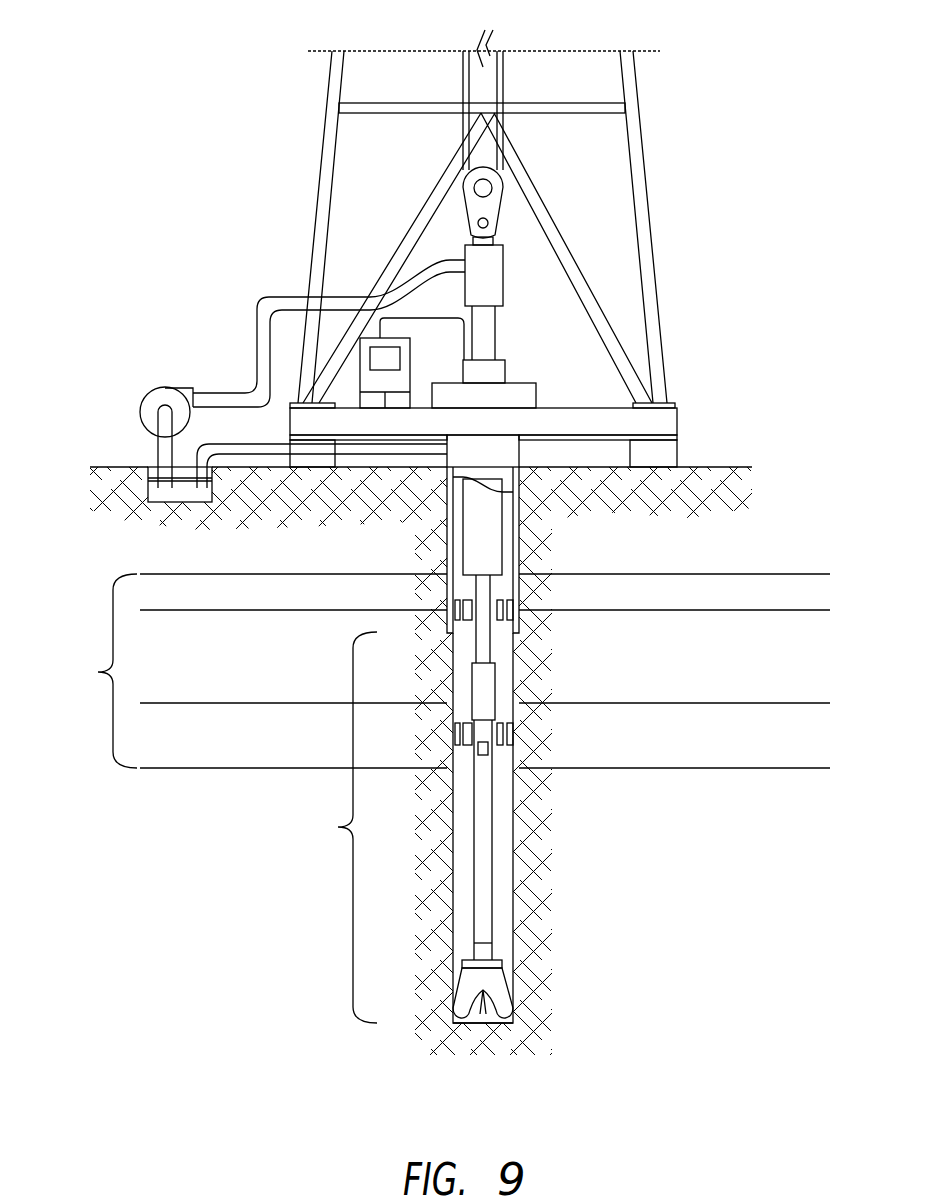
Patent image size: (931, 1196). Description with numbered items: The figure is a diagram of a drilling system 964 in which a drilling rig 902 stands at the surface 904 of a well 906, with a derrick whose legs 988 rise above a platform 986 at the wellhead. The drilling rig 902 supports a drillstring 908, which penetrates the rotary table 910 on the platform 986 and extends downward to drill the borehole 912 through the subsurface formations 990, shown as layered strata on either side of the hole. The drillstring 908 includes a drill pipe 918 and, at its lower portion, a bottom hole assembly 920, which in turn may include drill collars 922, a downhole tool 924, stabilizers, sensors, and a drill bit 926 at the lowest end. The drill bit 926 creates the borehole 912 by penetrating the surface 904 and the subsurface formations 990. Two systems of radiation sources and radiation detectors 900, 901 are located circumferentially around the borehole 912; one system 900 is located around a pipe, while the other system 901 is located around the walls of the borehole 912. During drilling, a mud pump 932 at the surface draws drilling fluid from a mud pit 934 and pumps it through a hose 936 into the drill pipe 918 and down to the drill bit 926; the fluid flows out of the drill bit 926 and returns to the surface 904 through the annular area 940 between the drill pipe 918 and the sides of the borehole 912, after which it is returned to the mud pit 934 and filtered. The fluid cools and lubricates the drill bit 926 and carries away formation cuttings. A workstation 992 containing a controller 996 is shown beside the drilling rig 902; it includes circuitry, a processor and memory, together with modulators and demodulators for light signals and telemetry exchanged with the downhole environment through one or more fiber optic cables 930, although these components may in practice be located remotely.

The system of radiation sources and radiation detectors 900 is at (549, 627).
The system of radiation sources and radiation detectors 901 is at (520, 733).
The drilling rig 902 is at (653, 258).
The surface 904 is at (740, 467).
The well 906 is at (546, 467).
The drillstring 908 is at (493, 833).
The rotary table 910 is at (520, 383).
The borehole 912 is at (513, 910).
The drill pipe 918 is at (505, 587).
The bottom hole assembly 920 is at (337, 827).
The drill collars 922 is at (505, 520).
The downhole tool 924 is at (495, 940).
The drill bit 926 is at (503, 990).
The fiber optic cables 930 is at (467, 383).
The mud pump 932 is at (163, 388).
The mud pit 934 is at (176, 503).
The hose 936 is at (263, 297).
The annular area 940 is at (505, 655).
The system 964 is at (238, 137).
The drilling platform 986 is at (678, 420).
The derrick legs 988 is at (640, 141).
The subsurface formations 990 is at (97, 672).
The workstation 992 is at (378, 336).
The controller 996 is at (402, 363).